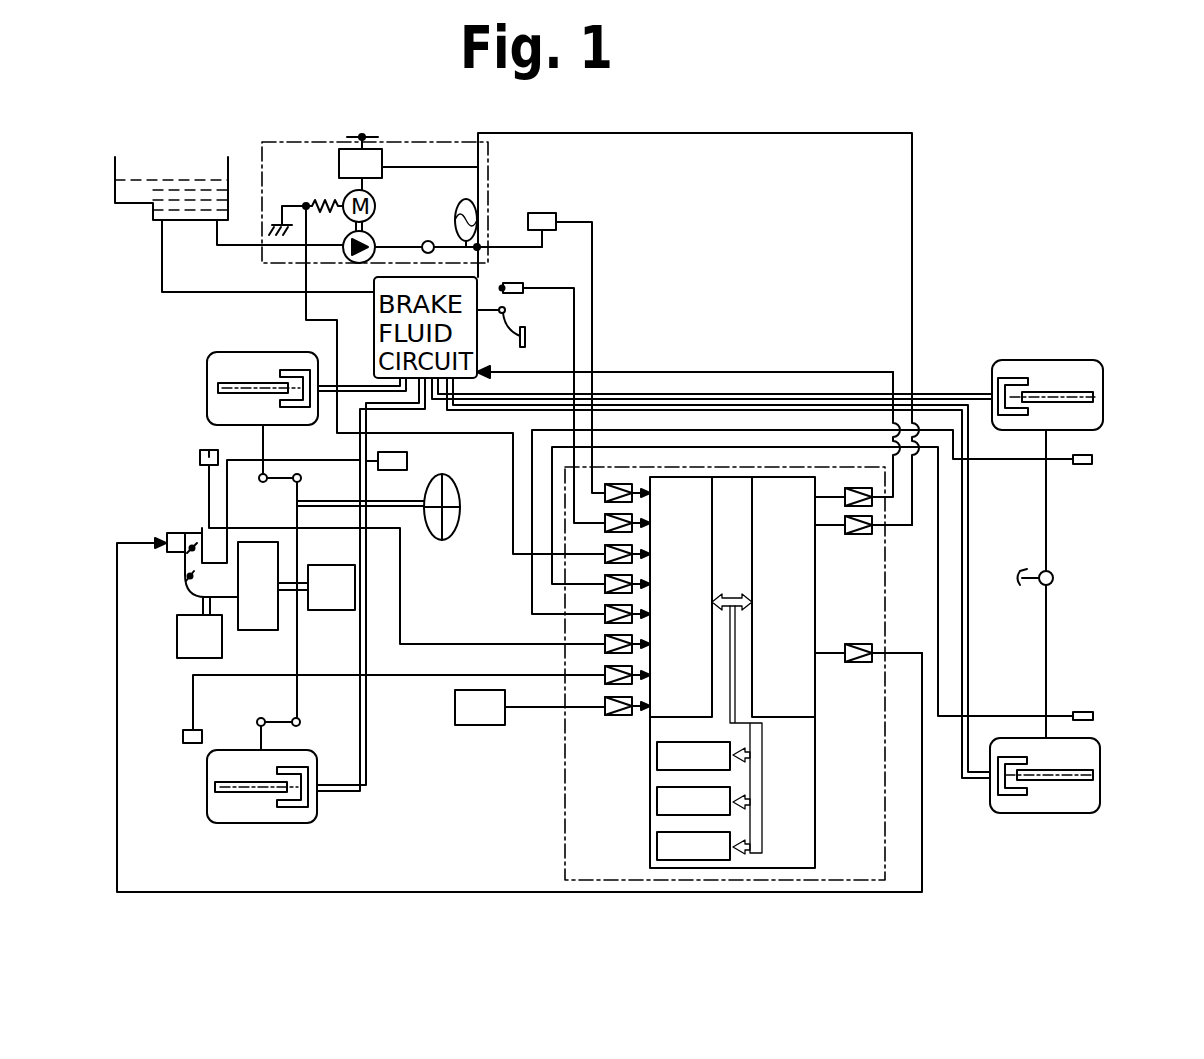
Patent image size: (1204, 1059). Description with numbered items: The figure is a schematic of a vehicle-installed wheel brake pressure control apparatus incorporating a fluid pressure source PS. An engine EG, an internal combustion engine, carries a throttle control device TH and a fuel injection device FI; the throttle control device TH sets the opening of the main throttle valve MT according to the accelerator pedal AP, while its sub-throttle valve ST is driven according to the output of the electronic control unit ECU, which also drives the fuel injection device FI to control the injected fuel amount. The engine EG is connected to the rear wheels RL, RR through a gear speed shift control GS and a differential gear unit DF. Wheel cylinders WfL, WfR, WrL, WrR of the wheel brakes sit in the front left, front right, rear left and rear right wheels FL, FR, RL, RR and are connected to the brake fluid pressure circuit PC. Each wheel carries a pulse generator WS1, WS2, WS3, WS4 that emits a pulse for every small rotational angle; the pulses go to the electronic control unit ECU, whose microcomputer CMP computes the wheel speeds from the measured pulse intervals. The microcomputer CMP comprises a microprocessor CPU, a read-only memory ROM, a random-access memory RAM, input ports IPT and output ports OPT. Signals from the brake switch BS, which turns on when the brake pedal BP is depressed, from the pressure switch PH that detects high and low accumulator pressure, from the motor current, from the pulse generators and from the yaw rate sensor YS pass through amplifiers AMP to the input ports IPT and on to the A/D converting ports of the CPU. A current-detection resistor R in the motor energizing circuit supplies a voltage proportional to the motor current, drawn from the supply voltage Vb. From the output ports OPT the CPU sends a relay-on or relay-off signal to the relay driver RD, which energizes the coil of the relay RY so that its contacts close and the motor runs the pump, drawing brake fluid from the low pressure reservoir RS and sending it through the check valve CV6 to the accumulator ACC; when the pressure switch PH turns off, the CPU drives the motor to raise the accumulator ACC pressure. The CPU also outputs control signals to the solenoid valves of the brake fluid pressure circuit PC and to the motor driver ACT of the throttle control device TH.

The low pressure reservoir RS is at (115, 183).
The fluid pressure source PS is at (492, 192).
The battery voltage Vb is at (364, 118).
The relay RY is at (360, 164).
The current-detection resistor R is at (324, 190).
The check valve CV6 is at (427, 240).
The accumulator ACC is at (464, 200).
The pressure switch PH is at (556, 216).
The brake switch BS is at (523, 286).
The brake pedal BP is at (525, 332).
The brake fluid pressure circuit PC is at (477, 358).
The wheel cylinder WfR is at (288, 372).
The front right wheel FR is at (219, 359).
The pulse generator WS2 is at (205, 448).
The throttle control device TH is at (188, 526).
The sub-throttle valve ST is at (160, 536).
The main throttle valve MT is at (185, 578).
The engine EG is at (258, 586).
The gear speed shift control GS is at (331, 587).
The fuel injection device FI is at (199, 627).
The accelerator pedal AP is at (407, 460).
The yaw rate sensor YS is at (530, 707).
The electronic control unit ECU is at (565, 762).
The amplifiers AMP is at (620, 716).
The input ports IPT is at (707, 510).
The output ports OPT is at (812, 510).
The microprocessor CPU is at (703, 756).
The read-only memory ROM is at (703, 801).
The random-access memory RAM is at (703, 846).
The relay driver RD is at (860, 536).
The motor driver ACT is at (858, 664).
The microcomputer CMP is at (817, 822).
The wheel cylinder WrR is at (1012, 378).
The rear right wheel RR is at (1054, 354).
The pulse generator WS4 is at (1088, 466).
The differential gear unit DF is at (1054, 580).
The pulse generator WS3 is at (1083, 710).
The wheel cylinder WrL is at (1017, 798).
The rear left wheel RL is at (1060, 827).
The pulse generator WS1 is at (183, 737).
The front left wheel FL is at (275, 818).
The wheel cylinder WfL is at (292, 808).